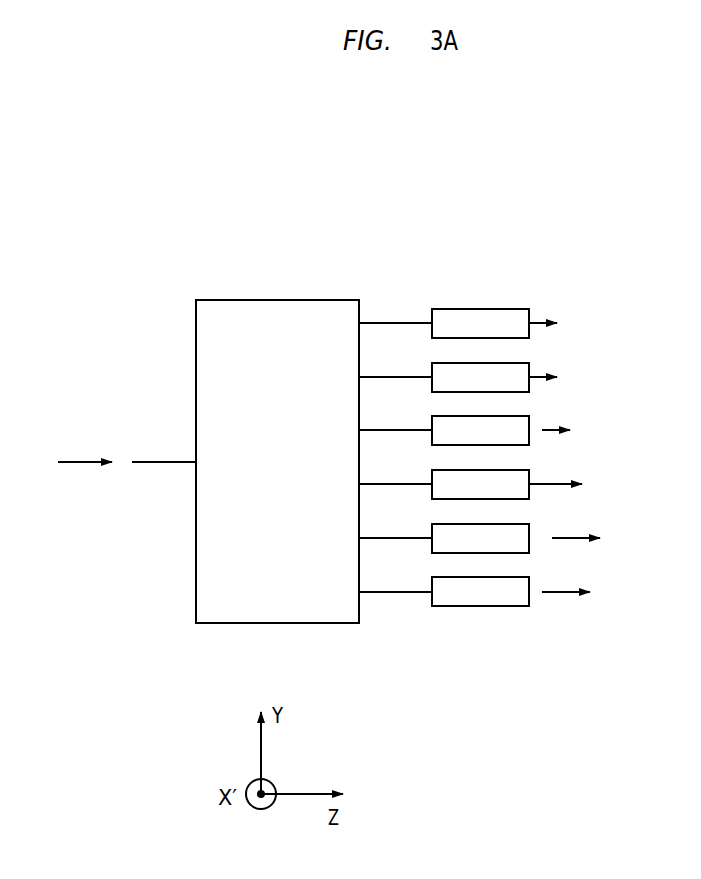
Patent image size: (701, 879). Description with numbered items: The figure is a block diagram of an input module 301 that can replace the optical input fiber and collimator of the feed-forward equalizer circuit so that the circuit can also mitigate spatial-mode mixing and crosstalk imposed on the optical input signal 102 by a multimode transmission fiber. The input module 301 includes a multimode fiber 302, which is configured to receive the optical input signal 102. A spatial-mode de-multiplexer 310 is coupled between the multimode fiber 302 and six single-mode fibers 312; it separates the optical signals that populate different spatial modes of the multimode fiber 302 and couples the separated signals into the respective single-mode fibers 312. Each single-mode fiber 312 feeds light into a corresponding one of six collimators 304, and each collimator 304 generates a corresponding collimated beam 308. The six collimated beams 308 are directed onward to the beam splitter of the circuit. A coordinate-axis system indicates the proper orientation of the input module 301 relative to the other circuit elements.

The input module 301 is at (335, 175).
The optical input signal 102 is at (80, 465).
The multimode fiber 302 is at (162, 465).
The spatial-mode de-multiplexer 310 is at (262, 625).
The single-mode fibers 312 is at (385, 321).
The collimators 304 is at (480, 308).
The collimated beams 308 is at (558, 323).